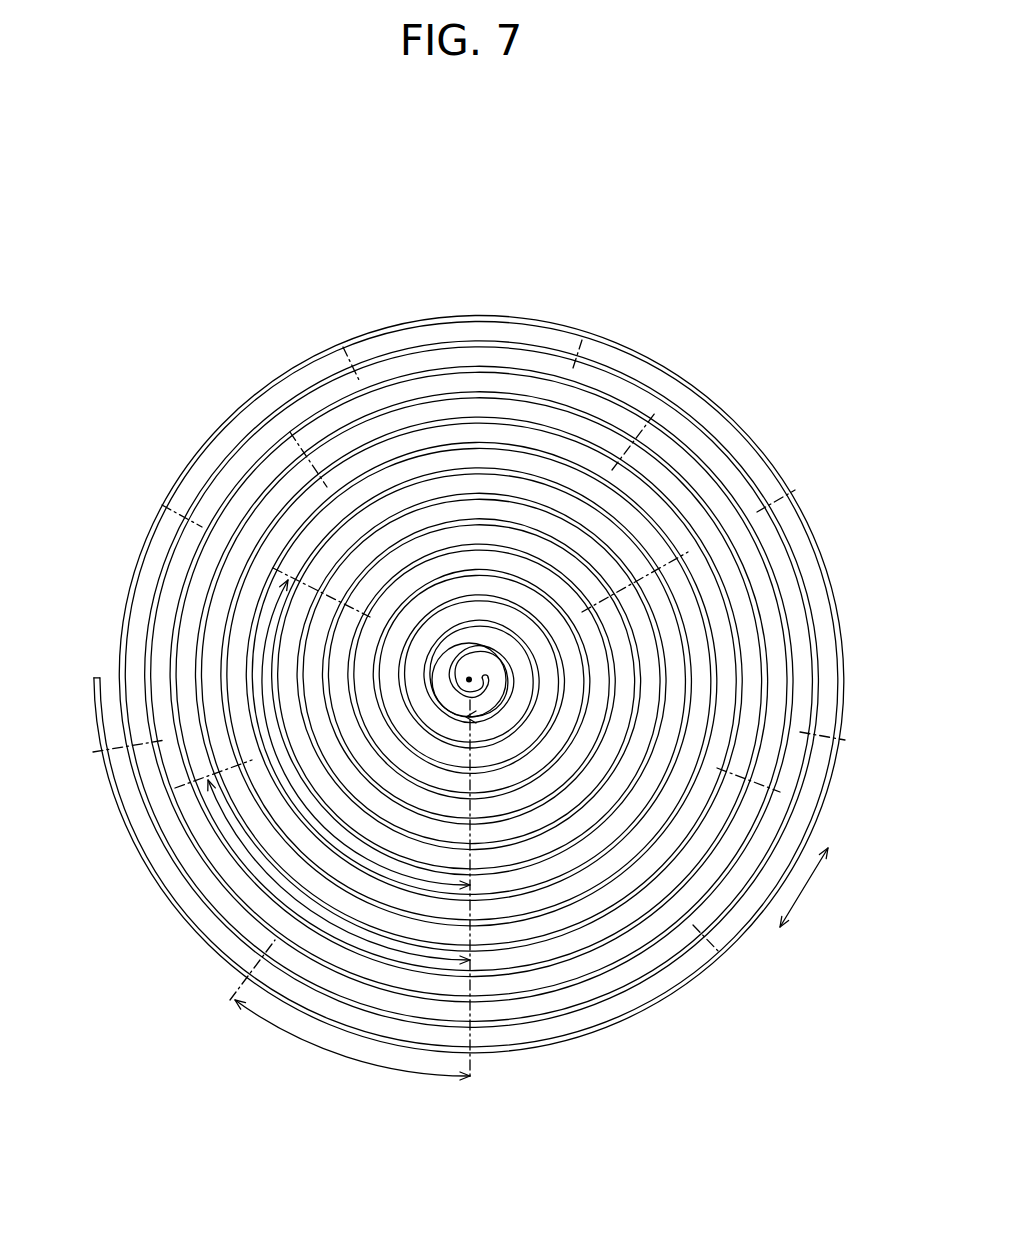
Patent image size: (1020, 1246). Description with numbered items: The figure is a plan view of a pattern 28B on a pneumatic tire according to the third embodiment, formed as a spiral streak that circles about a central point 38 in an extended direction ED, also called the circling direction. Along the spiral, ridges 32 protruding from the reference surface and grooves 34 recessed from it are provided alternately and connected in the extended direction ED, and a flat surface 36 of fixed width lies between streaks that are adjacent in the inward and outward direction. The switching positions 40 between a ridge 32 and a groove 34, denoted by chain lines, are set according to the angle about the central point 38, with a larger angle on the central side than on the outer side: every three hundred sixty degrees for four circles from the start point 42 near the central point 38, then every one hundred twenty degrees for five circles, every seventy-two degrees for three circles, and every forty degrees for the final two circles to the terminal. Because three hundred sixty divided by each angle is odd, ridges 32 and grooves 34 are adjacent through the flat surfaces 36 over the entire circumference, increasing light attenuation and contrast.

The pattern 28B is at (440, 235).
The ridge 32 is at (465, 318).
The groove 34 is at (227, 423).
The flat surface 36 is at (693, 403).
The central point 38 is at (469, 679).
The switching position 40 is at (346, 346).
The start point 42 is at (485, 682).
The extended direction ED is at (812, 887).